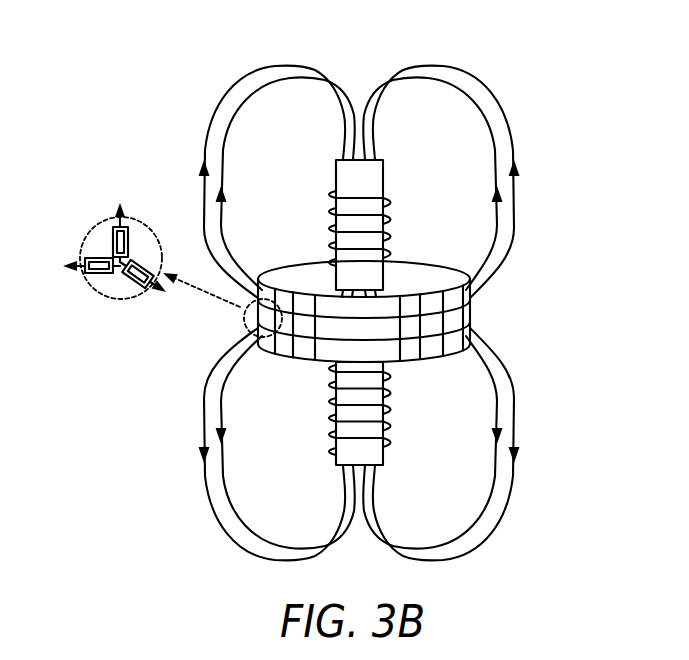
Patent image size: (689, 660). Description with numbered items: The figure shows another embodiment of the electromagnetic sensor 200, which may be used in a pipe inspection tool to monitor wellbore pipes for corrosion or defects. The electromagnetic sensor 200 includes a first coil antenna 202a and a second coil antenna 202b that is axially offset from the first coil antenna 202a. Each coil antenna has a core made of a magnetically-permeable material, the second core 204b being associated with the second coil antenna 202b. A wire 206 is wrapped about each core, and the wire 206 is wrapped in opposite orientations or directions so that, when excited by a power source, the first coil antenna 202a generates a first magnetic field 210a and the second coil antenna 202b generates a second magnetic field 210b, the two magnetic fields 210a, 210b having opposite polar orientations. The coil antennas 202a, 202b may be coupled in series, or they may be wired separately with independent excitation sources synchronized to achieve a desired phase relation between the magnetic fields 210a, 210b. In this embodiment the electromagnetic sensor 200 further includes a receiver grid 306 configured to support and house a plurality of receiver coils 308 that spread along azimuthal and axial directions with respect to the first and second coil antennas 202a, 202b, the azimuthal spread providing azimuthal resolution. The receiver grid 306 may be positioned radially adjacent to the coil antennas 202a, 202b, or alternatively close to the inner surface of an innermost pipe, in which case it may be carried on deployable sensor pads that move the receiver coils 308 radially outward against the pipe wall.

The electromagnetic sensor 200 is at (110, 140).
The first coil antenna 202a is at (400, 178).
The second coil antenna 202b is at (398, 469).
The second core 204b is at (378, 270).
The wire 206 is at (328, 268).
The receiver grid 306 is at (471, 305).
The first magnetic field 210a is at (521, 162).
The second magnetic field 210b is at (521, 436).
The receiver coils 308 is at (105, 287).